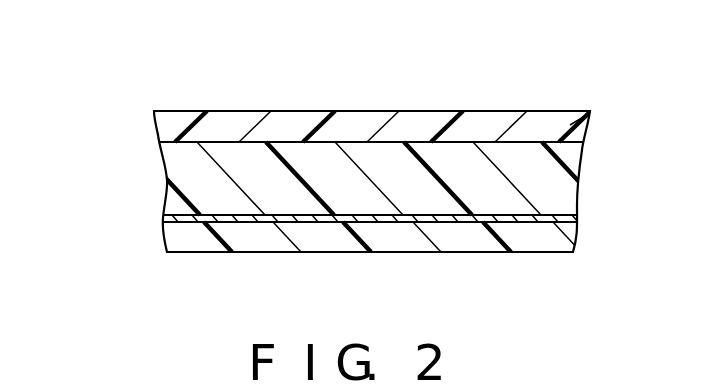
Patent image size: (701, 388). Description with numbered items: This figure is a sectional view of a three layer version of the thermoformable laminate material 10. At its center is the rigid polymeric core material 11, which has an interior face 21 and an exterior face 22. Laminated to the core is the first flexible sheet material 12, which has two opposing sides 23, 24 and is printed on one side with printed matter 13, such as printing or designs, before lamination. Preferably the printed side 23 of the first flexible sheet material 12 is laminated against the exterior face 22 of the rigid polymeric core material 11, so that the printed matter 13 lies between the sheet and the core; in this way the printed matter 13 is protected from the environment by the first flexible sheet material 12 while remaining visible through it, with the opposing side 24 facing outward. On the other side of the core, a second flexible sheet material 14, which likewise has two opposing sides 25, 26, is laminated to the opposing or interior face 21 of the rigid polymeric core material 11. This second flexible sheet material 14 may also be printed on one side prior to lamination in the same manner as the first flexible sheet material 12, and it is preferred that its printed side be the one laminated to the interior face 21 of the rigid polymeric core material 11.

The thermoformable laminate material 10 is at (79, 173).
The rigid polymeric core material 11 is at (563, 199).
The first flexible sheet material 12 is at (553, 243).
The printed matter 13 is at (163, 218).
The second flexible sheet material 14 is at (589, 125).
The interior face 21 is at (289, 141).
The exterior face 22 is at (290, 210).
The printed side 23 is at (433, 220).
The opposing side 24 is at (382, 252).
The side of second flexible sheet material 25 is at (467, 108).
The side of second flexible sheet material 26 is at (488, 111).